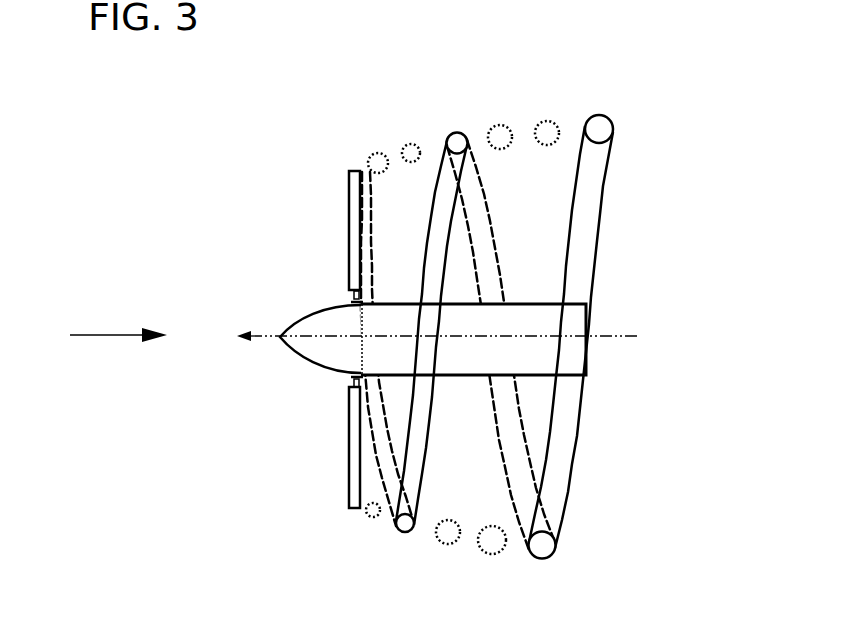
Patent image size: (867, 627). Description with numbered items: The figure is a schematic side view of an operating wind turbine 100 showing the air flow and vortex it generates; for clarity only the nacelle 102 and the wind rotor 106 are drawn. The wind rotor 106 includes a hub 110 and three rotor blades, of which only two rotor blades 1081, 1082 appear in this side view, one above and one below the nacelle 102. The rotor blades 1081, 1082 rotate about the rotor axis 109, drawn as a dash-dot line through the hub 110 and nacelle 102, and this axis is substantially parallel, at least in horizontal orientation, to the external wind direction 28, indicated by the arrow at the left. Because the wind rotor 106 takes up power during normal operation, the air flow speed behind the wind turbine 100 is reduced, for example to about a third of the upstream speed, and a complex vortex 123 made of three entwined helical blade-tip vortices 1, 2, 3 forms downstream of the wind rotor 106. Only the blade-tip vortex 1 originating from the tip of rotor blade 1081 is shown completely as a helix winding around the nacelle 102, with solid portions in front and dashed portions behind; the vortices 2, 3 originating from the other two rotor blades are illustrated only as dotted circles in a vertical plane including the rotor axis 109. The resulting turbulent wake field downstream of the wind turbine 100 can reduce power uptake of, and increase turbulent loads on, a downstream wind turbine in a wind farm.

The wind turbine 100 is at (226, 144).
The wind rotor 106 is at (240, 258).
The hub 110 is at (318, 306).
The rotor blade 1081 is at (355, 191).
The rotor blade 1082 is at (356, 484).
The rotor axis 109 is at (620, 337).
The external wind direction 28 is at (108, 334).
The complex vortex 123 is at (672, 124).
The nacelle 102 is at (472, 381).
The blade-tip vortex 1 is at (460, 134).
The blade-tip vortex 2 is at (378, 155).
The blade-tip vortex 3 is at (413, 145).